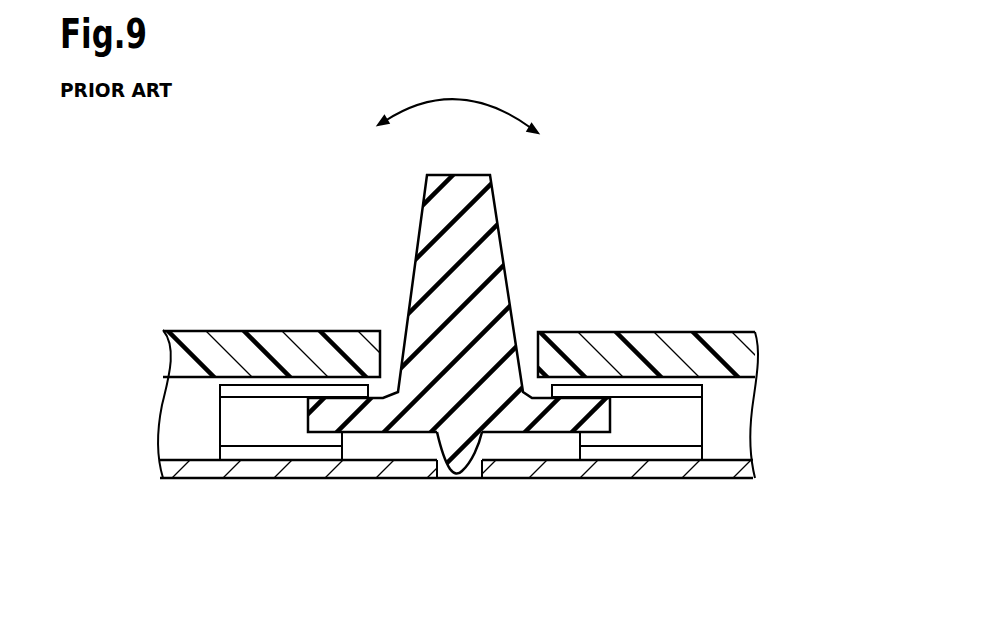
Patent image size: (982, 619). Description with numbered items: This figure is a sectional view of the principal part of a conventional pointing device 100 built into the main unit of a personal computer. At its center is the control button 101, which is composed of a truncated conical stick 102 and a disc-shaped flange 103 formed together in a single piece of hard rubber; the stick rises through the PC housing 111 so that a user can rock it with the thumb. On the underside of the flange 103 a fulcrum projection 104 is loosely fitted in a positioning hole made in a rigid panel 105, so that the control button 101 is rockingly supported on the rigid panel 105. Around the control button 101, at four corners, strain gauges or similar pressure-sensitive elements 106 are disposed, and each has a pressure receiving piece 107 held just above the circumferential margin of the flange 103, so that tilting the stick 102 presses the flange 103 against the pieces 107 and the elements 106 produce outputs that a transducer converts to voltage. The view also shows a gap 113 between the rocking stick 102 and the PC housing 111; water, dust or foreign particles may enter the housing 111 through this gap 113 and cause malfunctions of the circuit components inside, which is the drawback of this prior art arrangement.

The pointing device 100 is at (532, 273).
The control button 101 is at (491, 325).
The truncated conical stick 102 is at (481, 234).
The disc-shaped flange 103 is at (365, 425).
The fulcrum projection 104 is at (462, 458).
The rigid panel 105 is at (575, 472).
The pressure-sensitive element 106 is at (233, 430).
The pressure receiving piece 107 is at (235, 393).
The PC housing 111 is at (697, 332).
The gap 113 is at (205, 383).